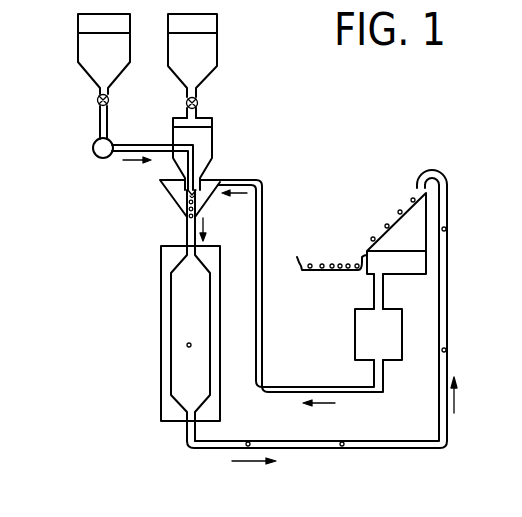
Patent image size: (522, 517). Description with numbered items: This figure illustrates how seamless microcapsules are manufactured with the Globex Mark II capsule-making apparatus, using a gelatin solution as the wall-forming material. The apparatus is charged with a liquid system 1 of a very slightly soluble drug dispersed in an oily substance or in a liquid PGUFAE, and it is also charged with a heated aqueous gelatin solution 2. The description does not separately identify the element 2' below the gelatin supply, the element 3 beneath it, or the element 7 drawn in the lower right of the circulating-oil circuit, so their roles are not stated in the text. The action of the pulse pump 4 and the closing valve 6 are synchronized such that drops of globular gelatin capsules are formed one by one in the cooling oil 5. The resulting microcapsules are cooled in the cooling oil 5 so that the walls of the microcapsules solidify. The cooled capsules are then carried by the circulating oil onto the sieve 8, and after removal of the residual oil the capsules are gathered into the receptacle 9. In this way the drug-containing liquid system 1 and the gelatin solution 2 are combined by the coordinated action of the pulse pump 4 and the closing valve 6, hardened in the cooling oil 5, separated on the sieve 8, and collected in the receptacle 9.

The liquid system 1 is at (87, 47).
The heated aqueous gelatin solution 2 is at (220, 66).
The metering valve 2' is at (218, 95).
The feed vessel 3 is at (205, 138).
The pulse pump 4 is at (103, 158).
The cooling oil 5 is at (178, 298).
The closing valve 6 is at (210, 182).
The separator box 7 is at (365, 336).
The sieve 8 is at (393, 222).
The receptacle 9 is at (323, 257).